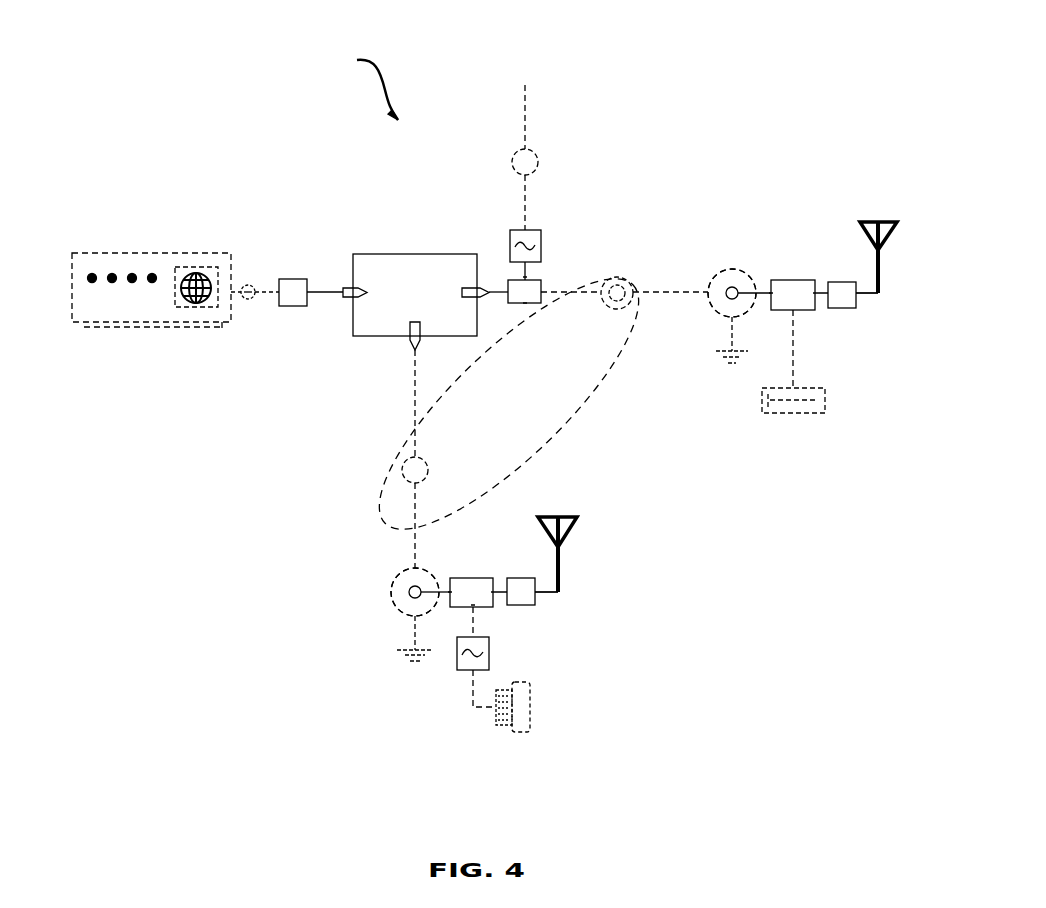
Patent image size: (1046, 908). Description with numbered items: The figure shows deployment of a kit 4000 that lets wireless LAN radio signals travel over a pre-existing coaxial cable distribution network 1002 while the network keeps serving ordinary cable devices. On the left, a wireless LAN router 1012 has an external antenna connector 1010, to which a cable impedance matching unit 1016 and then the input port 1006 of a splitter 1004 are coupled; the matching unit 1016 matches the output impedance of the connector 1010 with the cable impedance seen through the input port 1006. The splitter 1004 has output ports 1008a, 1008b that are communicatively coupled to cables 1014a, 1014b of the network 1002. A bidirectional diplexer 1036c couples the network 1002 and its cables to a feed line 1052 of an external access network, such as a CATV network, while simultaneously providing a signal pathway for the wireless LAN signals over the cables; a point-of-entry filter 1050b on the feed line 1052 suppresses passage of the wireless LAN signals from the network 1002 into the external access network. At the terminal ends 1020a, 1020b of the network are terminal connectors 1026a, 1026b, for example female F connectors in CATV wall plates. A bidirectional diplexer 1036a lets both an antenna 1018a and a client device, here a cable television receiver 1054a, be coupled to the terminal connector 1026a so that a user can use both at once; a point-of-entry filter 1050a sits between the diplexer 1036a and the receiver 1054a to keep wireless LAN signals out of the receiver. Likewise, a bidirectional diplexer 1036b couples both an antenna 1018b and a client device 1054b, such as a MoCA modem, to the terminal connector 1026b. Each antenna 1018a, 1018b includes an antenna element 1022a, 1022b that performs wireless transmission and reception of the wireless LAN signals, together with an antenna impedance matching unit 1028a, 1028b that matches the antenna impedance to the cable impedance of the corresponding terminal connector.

The kit 4000 is at (350, 87).
The pre-existing coaxial cable distribution network 1002 is at (301, 498).
The splitter 1004 is at (380, 208).
The input port 1006 is at (309, 244).
The output port 1008a is at (338, 352).
The output port 1008b is at (450, 230).
The external antenna connector 1010 is at (234, 230).
The wireless LAN router 1012 is at (94, 217).
The cable 1014a is at (342, 470).
The cable 1014b is at (630, 226).
The cable impedance matching unit 1016 is at (239, 342).
The antenna 1018a is at (642, 598).
The antenna 1018b is at (902, 323).
The terminal end 1020a is at (359, 563).
The terminal end 1020b is at (674, 322).
The antenna element 1022a is at (643, 512).
The antenna element 1022b is at (832, 185).
The terminal connector 1026a is at (342, 640).
The terminal connector 1026b is at (715, 216).
The antenna impedance matching unit 1028a is at (569, 642).
The antenna impedance matching unit 1028b is at (866, 349).
The bidirectional diplexer 1036a is at (493, 542).
The bidirectional diplexer 1036b is at (777, 239).
The bidirectional diplexer 1036c is at (548, 347).
The point-of-entry filter 1050a is at (407, 700).
The point-of-entry filter 1050b is at (572, 171).
The feed line 1052 is at (566, 76).
The cable television receiver 1054a is at (583, 734).
The client device 1054b is at (858, 447).